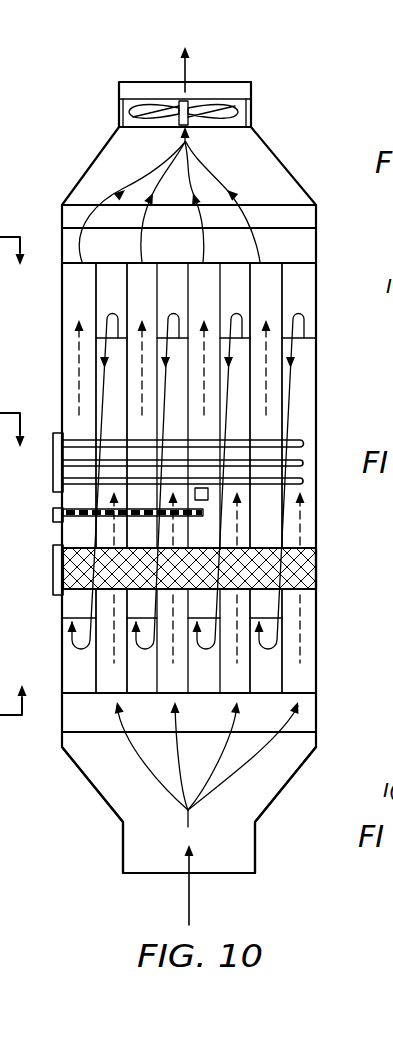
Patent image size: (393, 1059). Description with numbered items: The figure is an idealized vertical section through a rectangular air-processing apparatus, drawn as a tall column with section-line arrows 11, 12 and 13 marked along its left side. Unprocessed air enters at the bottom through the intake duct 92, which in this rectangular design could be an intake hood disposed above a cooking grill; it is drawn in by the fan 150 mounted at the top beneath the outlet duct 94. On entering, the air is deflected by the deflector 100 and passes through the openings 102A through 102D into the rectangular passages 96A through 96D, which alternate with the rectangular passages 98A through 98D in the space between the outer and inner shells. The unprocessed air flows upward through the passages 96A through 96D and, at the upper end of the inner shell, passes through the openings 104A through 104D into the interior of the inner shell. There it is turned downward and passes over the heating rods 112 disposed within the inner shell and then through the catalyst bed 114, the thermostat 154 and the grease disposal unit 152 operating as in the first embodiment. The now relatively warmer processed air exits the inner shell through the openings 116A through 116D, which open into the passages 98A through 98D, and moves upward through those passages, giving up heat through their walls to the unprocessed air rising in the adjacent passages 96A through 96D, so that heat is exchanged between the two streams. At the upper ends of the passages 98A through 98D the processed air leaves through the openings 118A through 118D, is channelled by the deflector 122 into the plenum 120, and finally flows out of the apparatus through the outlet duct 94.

The intake duct 92 is at (238, 875).
The outlet duct 94 is at (232, 82).
The fan 150 is at (240, 112).
The plenum 120 is at (148, 166).
The deflector 122 is at (288, 238).
The opening 118A is at (77, 270).
The opening 118D is at (277, 263).
The opening 104A is at (105, 295).
The opening 104D is at (308, 288).
The heating rods 112 is at (297, 435).
The thermostat 154 is at (204, 488).
The rectangular passage 98A is at (77, 498).
The rectangular passage 98D is at (273, 510).
The rectangular passage 96A is at (103, 520).
The rectangular passage 96D is at (310, 526).
The grease disposal unit 152 is at (100, 557).
The catalyst bed 114 is at (290, 582).
The opening 116A is at (70, 677).
The opening 116D is at (300, 657).
The opening 102A is at (113, 677).
The opening 102D is at (303, 697).
The deflector 100 is at (105, 720).
The section line 11 is at (14, 267).
The section line 12 is at (16, 688).
The section line 13 is at (15, 445).